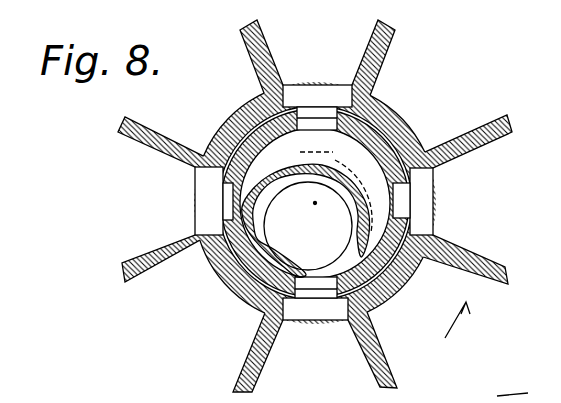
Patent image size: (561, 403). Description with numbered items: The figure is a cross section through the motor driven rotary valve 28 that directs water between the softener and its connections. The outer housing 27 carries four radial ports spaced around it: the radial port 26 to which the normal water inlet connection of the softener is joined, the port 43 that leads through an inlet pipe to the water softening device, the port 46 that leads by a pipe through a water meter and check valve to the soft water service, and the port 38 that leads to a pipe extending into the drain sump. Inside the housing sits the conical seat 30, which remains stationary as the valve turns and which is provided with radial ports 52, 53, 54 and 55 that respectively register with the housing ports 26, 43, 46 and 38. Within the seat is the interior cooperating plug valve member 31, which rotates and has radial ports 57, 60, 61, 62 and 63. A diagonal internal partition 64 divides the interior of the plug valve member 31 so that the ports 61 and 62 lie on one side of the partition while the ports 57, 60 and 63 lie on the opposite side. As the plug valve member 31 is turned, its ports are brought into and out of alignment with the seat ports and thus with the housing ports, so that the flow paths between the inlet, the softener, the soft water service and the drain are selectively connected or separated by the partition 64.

The radial port 26 is at (358, 53).
The housing 27 is at (396, 116).
The motor driven rotary valve 28 is at (236, 116).
The conical seat 30 is at (405, 282).
The plug valve member 31 is at (408, 142).
The port 38 is at (146, 191).
The port 43 is at (528, 213).
The port 46 is at (323, 385).
The radial port 52 is at (318, 108).
The radial port 53 is at (404, 190).
The radial port 54 is at (324, 290).
The radial port 55 is at (224, 193).
The radial port 57 is at (305, 128).
The radial port 60 is at (393, 210).
The radial port 61 is at (323, 282).
The radial port 62 is at (248, 253).
The radial port 63 is at (258, 144).
The diagonal internal partition 64 is at (322, 172).